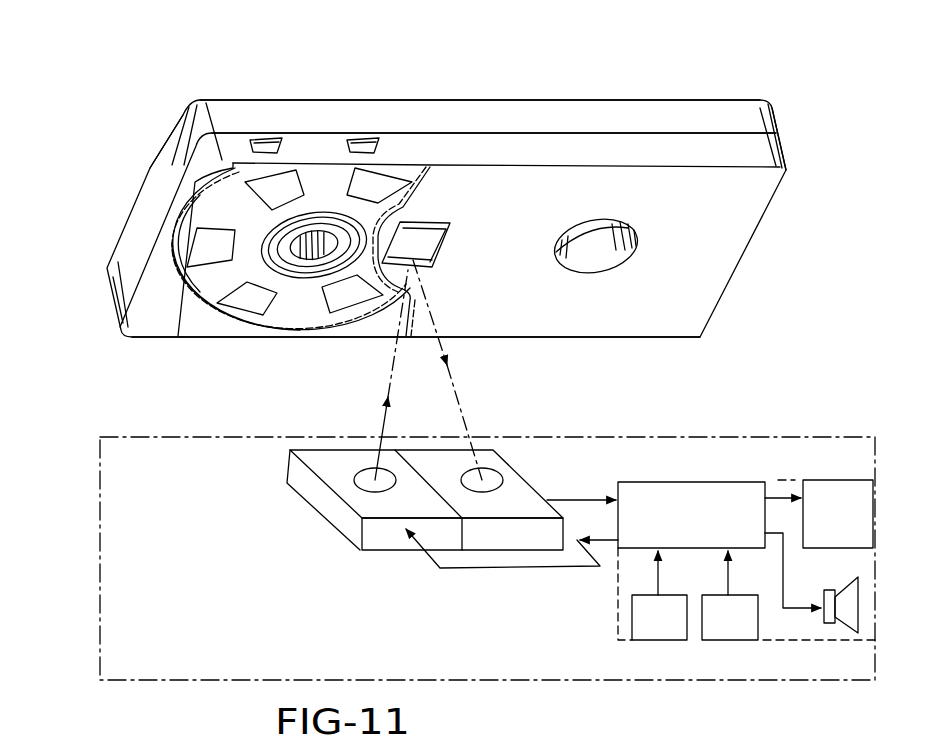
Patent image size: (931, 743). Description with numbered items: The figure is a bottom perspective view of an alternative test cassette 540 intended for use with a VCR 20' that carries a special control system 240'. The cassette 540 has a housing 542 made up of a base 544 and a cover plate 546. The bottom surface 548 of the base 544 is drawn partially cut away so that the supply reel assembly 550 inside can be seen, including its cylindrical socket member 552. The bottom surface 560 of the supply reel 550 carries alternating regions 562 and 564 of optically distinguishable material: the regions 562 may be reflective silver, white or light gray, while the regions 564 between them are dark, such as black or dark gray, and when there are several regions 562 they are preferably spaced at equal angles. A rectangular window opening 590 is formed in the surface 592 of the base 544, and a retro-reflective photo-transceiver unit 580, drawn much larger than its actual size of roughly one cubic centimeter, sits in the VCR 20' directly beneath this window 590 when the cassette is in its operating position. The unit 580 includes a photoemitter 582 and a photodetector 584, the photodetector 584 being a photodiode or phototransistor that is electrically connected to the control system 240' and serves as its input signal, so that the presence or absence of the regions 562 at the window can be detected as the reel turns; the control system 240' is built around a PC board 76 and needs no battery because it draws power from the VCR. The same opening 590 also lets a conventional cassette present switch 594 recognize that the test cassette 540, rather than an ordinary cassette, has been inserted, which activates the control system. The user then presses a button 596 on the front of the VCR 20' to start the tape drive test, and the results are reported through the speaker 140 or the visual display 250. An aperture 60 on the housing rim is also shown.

The tape cassette 540 is at (715, 27).
The housing 542 is at (523, 100).
The base 544 is at (750, 152).
The cover plate 546 is at (297, 55).
The bottom surface 548 is at (517, 322).
The surface 592 is at (543, 140).
The aperture 60 is at (257, 140).
The supply reel assembly 550 is at (290, 325).
The cylindrical socket member 552 is at (310, 255).
The bottom surface 560 is at (215, 288).
The regions 562 is at (383, 173).
The regions 564 is at (322, 170).
The window opening 590 is at (375, 152).
The retro-reflective photo-transceiver unit 580 is at (312, 487).
The photoemitter 582 is at (362, 483).
The photodetector 584 is at (488, 475).
The VCR 20' is at (487, 534).
The control system 240' is at (719, 569).
The PC board 76 is at (700, 547).
The visual display 250 is at (850, 547).
The cassette present switch 594 is at (643, 627).
The button 596 is at (718, 630).
The speaker 140 is at (843, 617).